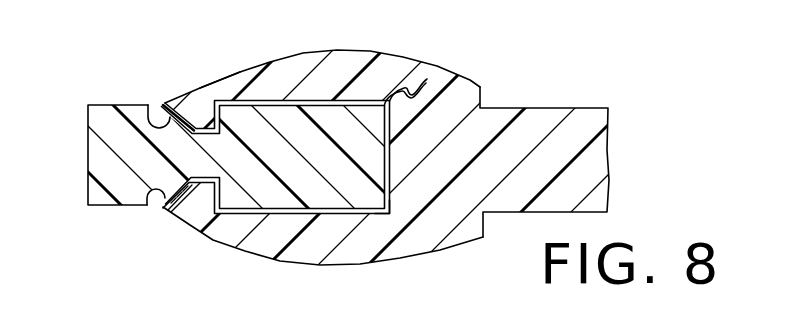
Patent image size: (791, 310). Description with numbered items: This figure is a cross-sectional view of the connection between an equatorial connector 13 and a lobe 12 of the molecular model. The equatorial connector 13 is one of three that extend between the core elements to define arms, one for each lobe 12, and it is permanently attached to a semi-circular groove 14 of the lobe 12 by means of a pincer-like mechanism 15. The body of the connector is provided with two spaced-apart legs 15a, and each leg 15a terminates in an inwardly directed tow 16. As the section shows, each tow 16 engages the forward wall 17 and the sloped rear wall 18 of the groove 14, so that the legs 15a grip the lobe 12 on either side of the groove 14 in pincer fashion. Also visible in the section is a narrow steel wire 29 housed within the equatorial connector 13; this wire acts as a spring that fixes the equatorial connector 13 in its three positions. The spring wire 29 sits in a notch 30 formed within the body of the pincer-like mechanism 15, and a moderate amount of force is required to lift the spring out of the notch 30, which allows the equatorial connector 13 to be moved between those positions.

The lobe 12 is at (94, 198).
The equatorial connector 13 is at (589, 108).
The semi-circular groove 14 is at (183, 203).
The pincer-like mechanism 15 is at (480, 88).
The leg 15a is at (409, 62).
The tow 16 is at (219, 81).
The forward wall 17 is at (235, 100).
The sloped rear wall 18 is at (153, 112).
The steel wire 29 is at (430, 80).
The notch 30 is at (371, 218).